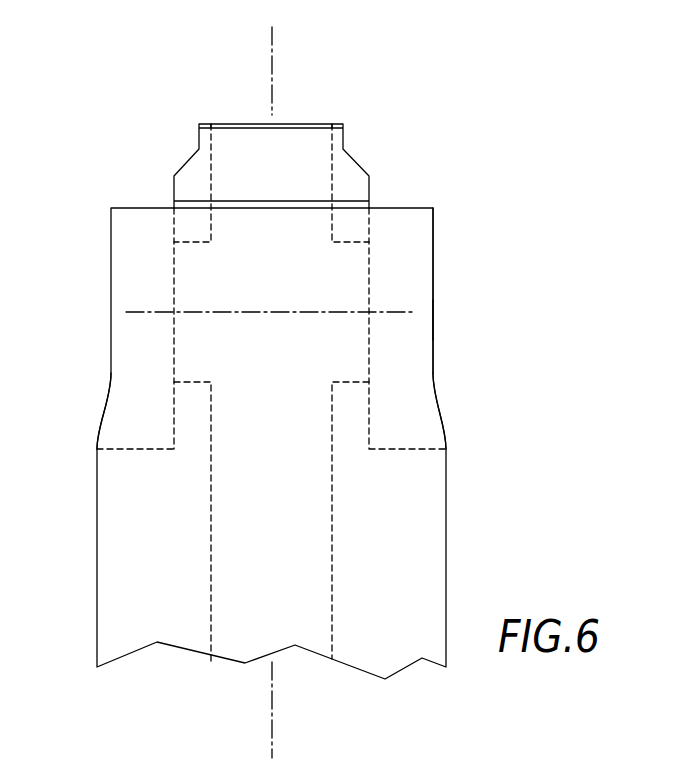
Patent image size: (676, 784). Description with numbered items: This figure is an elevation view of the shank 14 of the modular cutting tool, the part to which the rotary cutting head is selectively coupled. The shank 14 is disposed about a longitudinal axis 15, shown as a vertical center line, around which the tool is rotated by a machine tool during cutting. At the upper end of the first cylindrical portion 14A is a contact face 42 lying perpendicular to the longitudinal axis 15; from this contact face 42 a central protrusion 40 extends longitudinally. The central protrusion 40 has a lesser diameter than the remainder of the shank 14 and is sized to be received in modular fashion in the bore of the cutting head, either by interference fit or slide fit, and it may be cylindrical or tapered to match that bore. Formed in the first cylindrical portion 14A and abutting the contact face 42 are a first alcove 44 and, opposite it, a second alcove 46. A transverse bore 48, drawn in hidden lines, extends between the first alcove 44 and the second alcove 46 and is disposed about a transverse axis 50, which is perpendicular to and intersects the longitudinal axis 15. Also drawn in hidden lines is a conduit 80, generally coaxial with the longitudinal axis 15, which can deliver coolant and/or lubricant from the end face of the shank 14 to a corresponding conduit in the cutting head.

The shank 14 is at (468, 322).
The first cylindrical portion 14A is at (389, 293).
The longitudinal axis 15 is at (270, 92).
The central protrusion 40 is at (319, 148).
The contact face 42 is at (405, 208).
The first alcove 44 is at (140, 372).
The second alcove 46 is at (400, 369).
The transverse bore 48 is at (200, 244).
The transverse axis 50 is at (153, 313).
The conduit 80 is at (326, 528).